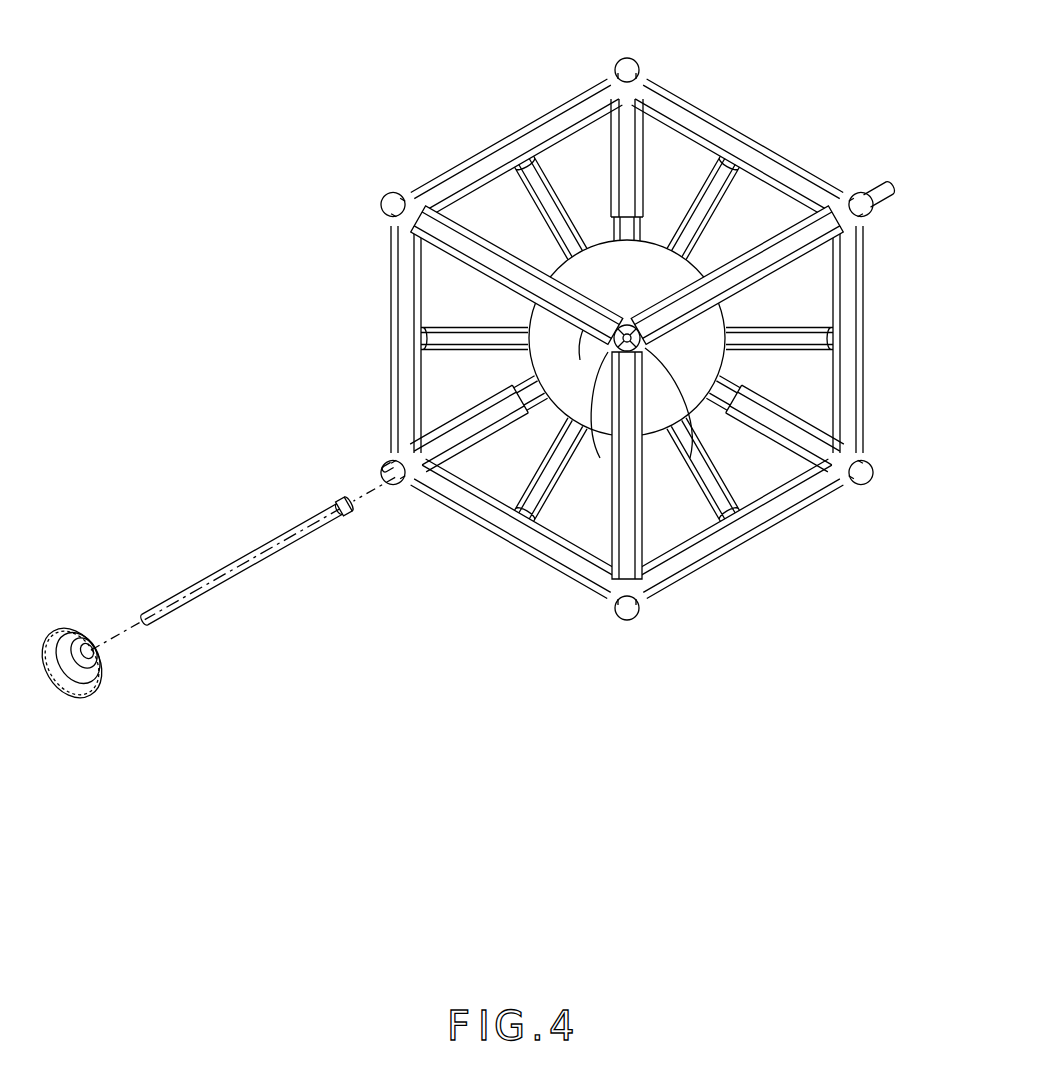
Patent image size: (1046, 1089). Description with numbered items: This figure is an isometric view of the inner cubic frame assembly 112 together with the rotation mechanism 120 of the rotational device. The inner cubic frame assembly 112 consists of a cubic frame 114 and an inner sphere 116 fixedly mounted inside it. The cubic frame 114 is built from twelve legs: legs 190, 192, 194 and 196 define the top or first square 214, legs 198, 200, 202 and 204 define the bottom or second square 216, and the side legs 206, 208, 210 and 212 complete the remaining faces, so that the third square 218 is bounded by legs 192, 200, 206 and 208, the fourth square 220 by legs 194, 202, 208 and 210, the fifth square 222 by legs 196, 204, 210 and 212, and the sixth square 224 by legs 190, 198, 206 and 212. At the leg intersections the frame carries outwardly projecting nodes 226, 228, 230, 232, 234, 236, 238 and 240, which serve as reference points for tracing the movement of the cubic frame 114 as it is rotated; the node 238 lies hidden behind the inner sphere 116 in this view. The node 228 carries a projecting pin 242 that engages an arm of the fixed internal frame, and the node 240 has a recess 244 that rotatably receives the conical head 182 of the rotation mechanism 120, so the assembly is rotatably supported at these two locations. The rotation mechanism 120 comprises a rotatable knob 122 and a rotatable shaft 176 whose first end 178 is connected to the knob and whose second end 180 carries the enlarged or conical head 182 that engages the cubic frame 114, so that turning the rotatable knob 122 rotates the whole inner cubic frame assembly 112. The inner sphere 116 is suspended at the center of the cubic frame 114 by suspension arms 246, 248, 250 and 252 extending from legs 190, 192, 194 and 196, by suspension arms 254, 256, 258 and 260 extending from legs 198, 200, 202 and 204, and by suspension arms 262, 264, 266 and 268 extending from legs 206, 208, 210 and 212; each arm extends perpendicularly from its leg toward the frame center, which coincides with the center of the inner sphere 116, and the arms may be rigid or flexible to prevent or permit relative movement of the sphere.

The inner cubic frame assembly 112 is at (616, 345).
The cubic frame 114 is at (347, 339).
The inner sphere 116 is at (644, 263).
The rotation mechanism 120 is at (214, 562).
The rotatable knob 122 is at (97, 684).
The rotatable shaft 176 is at (243, 560).
The first end 178 is at (143, 610).
The second end 180 is at (325, 507).
The conical head 182 is at (338, 503).
The leg 190 is at (465, 238).
The leg 192 is at (732, 270).
The leg 194 is at (773, 160).
The leg 196 is at (460, 170).
The leg 198 is at (548, 548).
The leg 200 is at (787, 503).
The leg 202 is at (812, 415).
The leg 204 is at (420, 419).
The leg 206 is at (630, 540).
The leg 208 is at (893, 339).
The leg 210 is at (655, 138).
The leg 212 is at (395, 348).
The first square 214 is at (490, 109).
The second square 216 is at (593, 532).
The third square 218 is at (866, 438).
The fourth square 220 is at (895, 324).
The fifth square 222 is at (349, 187).
The sixth square 224 is at (487, 470).
The node 226 is at (670, 445).
The node 228 is at (860, 193).
The node 230 is at (637, 60).
The node 232 is at (383, 205).
The node 234 is at (632, 618).
The node 236 is at (880, 490).
The node 238 is at (598, 366).
The node 240 is at (382, 462).
The projecting pin 242 is at (881, 186).
The recess 244 is at (390, 488).
The suspension arm 246 is at (586, 347).
The suspension arm 248 is at (697, 440).
The suspension arm 250 is at (720, 204).
The suspension arm 252 is at (528, 202).
The suspension arm 254 is at (507, 540).
The suspension arm 256 is at (734, 527).
The suspension arm 258 is at (829, 418).
The suspension arm 260 is at (528, 394).
The suspension arm 262 is at (607, 420).
The suspension arm 264 is at (812, 342).
The suspension arm 266 is at (625, 227).
The suspension arm 268 is at (505, 335).